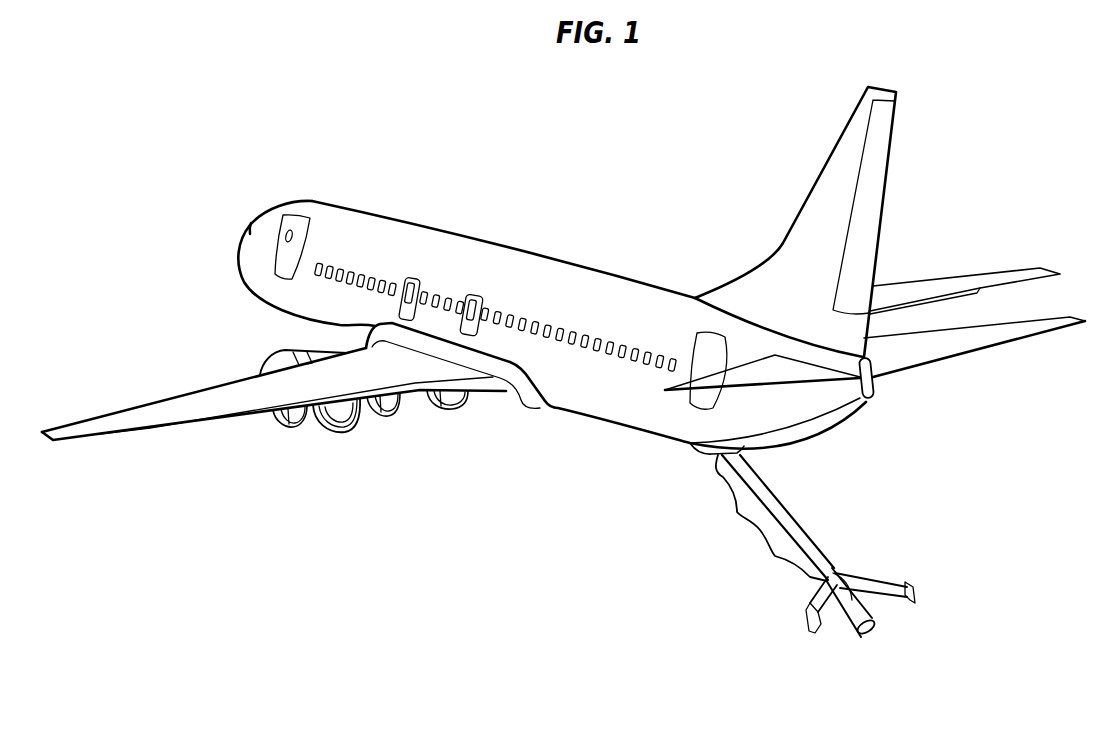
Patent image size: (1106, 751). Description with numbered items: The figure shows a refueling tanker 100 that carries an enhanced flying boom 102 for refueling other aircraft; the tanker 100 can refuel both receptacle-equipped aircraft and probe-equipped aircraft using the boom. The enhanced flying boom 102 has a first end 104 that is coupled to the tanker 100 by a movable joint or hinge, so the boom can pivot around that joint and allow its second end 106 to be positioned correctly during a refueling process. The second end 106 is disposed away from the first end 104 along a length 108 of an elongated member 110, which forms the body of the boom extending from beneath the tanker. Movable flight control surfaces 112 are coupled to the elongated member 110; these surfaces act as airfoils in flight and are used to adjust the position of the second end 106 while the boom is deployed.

The refueling tanker 100 is at (681, 128).
The enhanced flying boom 102 is at (840, 497).
The first end 104 is at (694, 464).
The second end 106 is at (886, 646).
The length 108 is at (767, 547).
The elongated member 110 is at (790, 517).
The movable flight control surfaces 112 is at (885, 578).